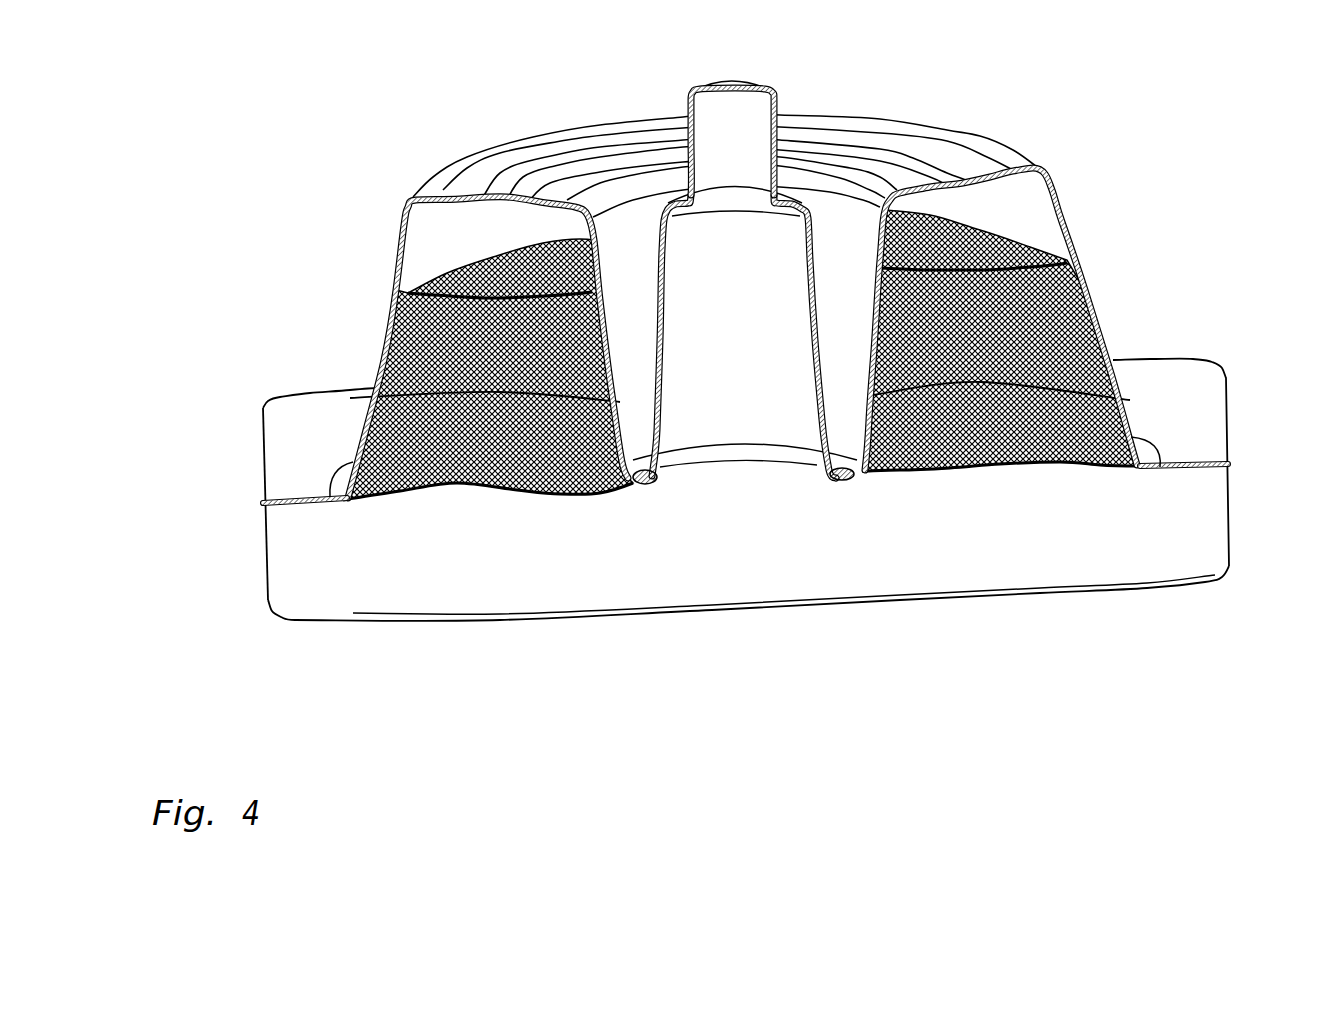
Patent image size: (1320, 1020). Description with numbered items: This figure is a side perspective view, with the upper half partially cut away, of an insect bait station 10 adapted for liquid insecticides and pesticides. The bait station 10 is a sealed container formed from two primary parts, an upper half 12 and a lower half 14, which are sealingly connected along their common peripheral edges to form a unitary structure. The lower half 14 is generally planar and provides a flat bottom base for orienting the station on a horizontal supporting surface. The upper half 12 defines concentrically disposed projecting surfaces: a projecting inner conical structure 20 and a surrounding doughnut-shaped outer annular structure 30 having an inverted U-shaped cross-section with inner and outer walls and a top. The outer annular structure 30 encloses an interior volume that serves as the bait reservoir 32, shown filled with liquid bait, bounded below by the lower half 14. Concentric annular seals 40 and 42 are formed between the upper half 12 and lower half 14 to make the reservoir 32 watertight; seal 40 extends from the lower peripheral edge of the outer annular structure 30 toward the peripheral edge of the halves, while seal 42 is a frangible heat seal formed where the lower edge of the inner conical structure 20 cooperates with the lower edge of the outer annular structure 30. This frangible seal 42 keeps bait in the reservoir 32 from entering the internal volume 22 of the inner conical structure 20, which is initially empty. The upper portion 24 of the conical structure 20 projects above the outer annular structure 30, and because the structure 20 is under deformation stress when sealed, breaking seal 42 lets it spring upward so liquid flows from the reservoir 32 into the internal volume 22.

The insect bait station 10 is at (376, 178).
The upper half 12 is at (1174, 402).
The lower half 14 is at (481, 588).
The inner conical structure 20 is at (783, 254).
The internal volume 22 is at (764, 318).
The upper portion 24 is at (698, 112).
The outer annular structure 30 is at (1009, 125).
The bait reservoir 32 is at (474, 249).
The seal 40 is at (1147, 450).
The frangible seal 42 is at (733, 533).